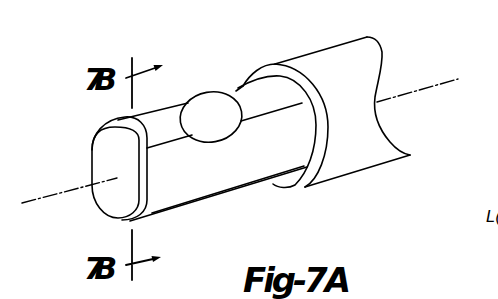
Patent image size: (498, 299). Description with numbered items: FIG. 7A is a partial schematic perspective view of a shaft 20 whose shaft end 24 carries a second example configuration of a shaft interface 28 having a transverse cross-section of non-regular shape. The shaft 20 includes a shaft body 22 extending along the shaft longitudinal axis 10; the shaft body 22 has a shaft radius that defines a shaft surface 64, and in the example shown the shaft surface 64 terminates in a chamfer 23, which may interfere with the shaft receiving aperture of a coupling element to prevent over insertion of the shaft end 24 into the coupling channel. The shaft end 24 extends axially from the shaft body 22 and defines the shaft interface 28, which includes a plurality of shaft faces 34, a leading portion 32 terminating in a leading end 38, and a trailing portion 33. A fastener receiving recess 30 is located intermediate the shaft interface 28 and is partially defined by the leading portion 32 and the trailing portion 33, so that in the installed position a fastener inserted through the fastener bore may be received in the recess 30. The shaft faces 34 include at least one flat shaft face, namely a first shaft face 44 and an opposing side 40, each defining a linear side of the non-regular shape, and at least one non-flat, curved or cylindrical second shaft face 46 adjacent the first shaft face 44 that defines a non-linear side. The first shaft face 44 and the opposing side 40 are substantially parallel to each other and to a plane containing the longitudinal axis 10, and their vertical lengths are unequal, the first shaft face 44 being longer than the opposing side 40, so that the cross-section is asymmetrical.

The shaft longitudinal axis 10 is at (38, 203).
The shaft 20 is at (75, 145).
The shaft body 22 is at (360, 185).
The chamfer 23 is at (317, 134).
The shaft end 24 is at (200, 248).
The shaft interface 28 is at (237, 175).
The fastener receiving recess 30 is at (207, 115).
The leading portion 32 is at (97, 110).
The trailing portion 33 is at (237, 55).
The shaft faces 34 is at (164, 212).
The leading end 38 is at (101, 151).
The opposing side 40 is at (420, 0).
The first shaft face 44 is at (190, 184).
The second shaft face 46 is at (237, 100).
The shaft surface 64 is at (327, 60).